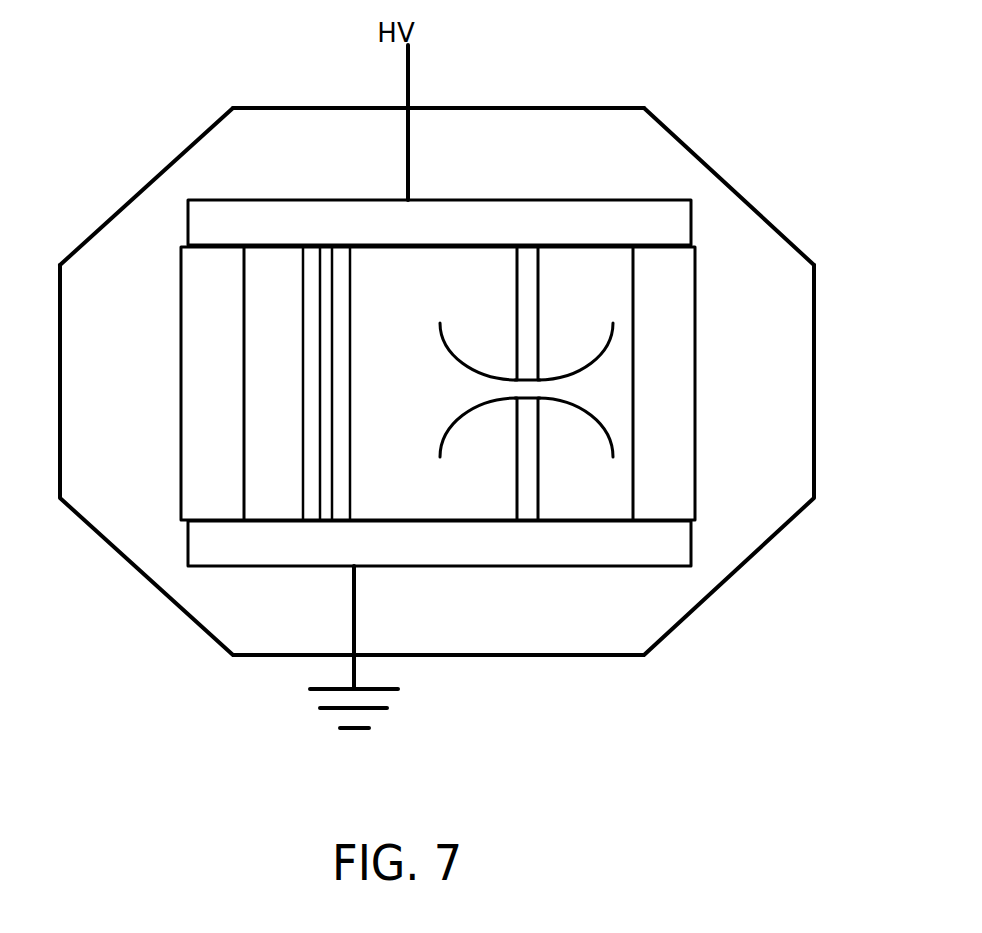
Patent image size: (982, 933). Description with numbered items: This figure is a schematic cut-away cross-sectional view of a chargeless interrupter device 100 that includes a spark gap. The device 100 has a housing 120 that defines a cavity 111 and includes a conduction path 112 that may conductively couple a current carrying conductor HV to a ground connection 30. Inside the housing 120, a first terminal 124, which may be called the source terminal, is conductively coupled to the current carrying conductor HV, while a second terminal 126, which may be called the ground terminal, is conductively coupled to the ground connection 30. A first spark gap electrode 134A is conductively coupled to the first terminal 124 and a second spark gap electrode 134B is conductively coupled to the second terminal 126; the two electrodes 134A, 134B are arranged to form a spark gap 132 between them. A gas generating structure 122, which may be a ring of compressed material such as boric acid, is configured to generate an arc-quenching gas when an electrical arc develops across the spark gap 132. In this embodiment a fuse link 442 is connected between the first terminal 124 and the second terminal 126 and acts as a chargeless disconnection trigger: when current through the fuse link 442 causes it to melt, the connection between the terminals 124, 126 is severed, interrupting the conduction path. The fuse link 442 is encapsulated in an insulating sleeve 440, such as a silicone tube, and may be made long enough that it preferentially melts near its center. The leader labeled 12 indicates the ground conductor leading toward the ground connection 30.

The chargeless interrupter device 100 is at (734, 185).
The cavity 111 is at (671, 157).
The conduction path 112 is at (408, 133).
The housing 120 is at (137, 193).
The gas generating structure 122 is at (182, 443).
The first terminal 124 is at (686, 225).
The second terminal 126 is at (473, 567).
The spark gap 132 is at (545, 390).
The first spark gap electrode 134A is at (523, 327).
The second spark gap electrode 134B is at (530, 483).
The insulating sleeve 440 is at (302, 445).
The fuse link 442 is at (323, 302).
The ground conductor 12 is at (357, 667).
The ground connection 30 is at (313, 689).